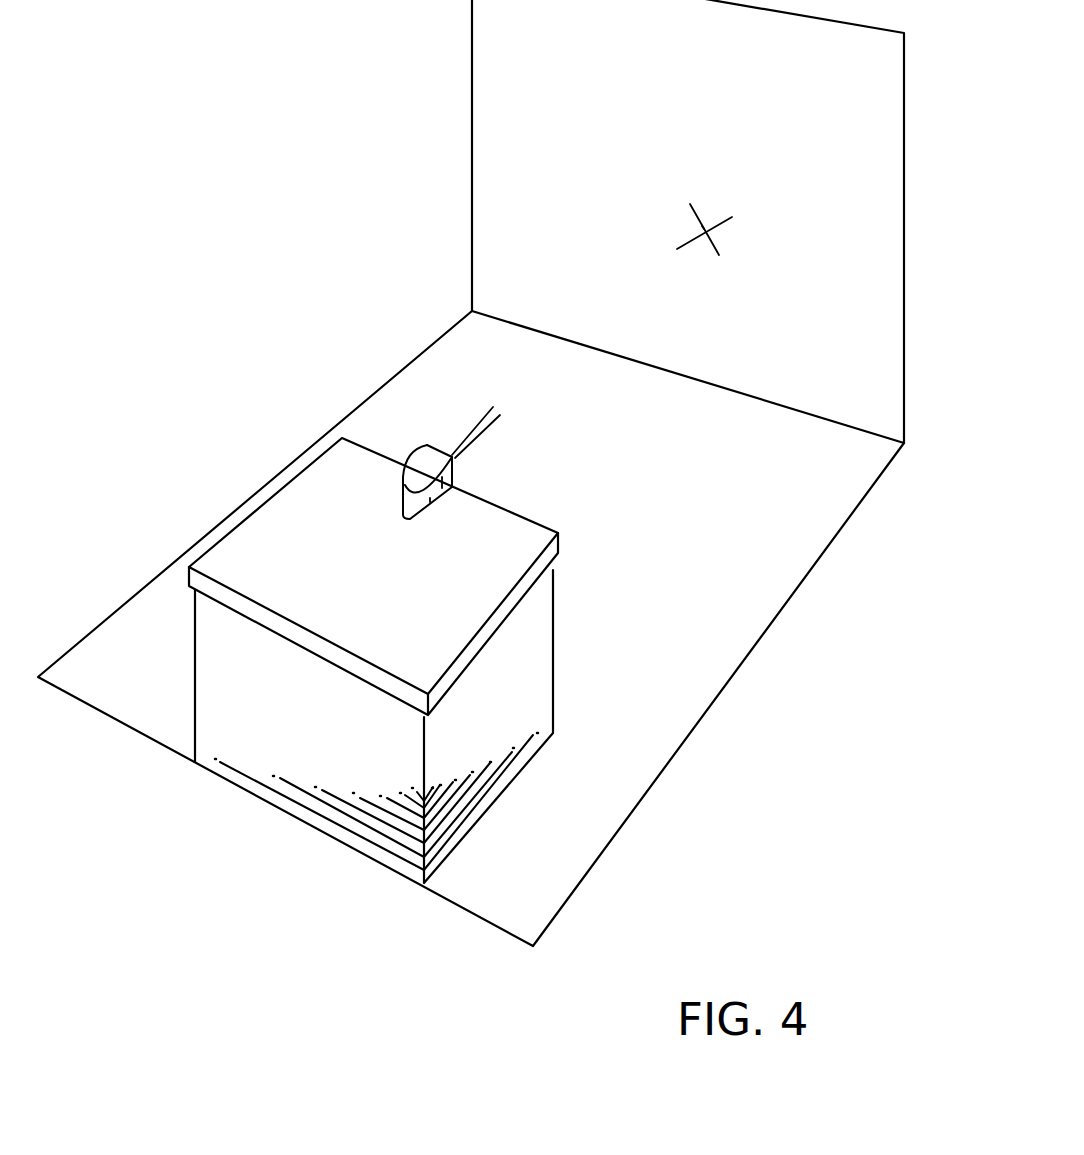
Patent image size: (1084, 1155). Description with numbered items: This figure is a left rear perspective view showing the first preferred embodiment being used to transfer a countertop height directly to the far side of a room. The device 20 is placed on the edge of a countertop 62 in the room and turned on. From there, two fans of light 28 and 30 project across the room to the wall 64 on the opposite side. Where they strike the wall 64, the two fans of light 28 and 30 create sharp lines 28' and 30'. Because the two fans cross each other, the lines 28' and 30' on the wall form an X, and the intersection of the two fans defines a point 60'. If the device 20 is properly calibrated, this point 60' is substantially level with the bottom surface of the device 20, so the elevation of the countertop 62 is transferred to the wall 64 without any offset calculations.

The device 20 is at (405, 467).
The fan of light 28 is at (468, 408).
The fan of light 30 is at (492, 455).
The countertop 62 is at (272, 545).
The wall 64 is at (526, 157).
The line 28' is at (718, 200).
The line 30' is at (745, 242).
The point 60' is at (697, 270).